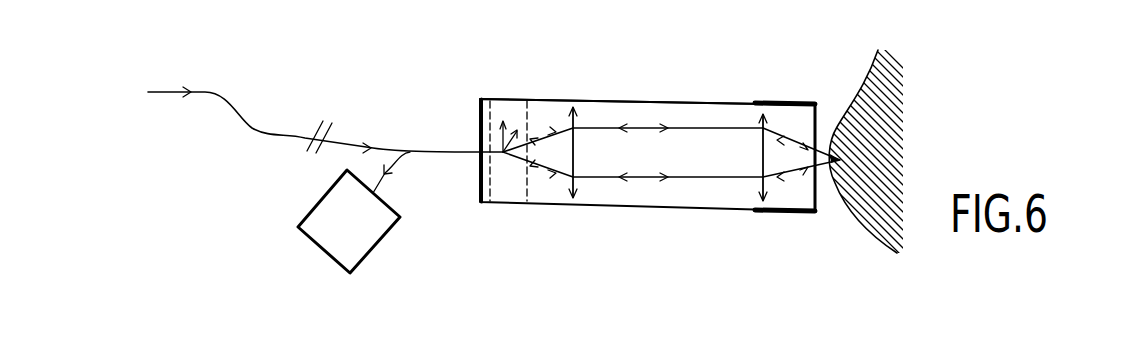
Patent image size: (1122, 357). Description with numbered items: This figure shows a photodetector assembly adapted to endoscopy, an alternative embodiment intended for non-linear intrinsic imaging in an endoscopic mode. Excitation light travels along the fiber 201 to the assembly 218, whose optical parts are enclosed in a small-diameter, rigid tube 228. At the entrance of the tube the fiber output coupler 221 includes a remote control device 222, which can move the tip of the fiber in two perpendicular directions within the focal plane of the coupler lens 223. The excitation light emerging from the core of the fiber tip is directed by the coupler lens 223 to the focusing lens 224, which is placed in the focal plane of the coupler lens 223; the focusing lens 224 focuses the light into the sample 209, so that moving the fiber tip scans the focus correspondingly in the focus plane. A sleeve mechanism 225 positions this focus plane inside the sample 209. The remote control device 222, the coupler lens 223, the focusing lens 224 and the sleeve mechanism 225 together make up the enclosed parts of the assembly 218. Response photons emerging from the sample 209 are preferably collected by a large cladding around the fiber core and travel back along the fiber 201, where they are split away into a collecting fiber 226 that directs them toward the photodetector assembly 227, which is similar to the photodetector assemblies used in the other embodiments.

The fiber 201 is at (243, 117).
The assembly 218 is at (458, 84).
The rigid tube 228 is at (633, 98).
The fiber output coupler 221 is at (493, 203).
The remote control device 222 is at (511, 191).
The coupler lens 223 is at (577, 184).
The focusing lens 224 is at (760, 187).
The sleeve mechanism 225 is at (785, 215).
The collecting fiber 226 is at (407, 154).
The photodetector assembly 227 is at (313, 205).
The sample 209 is at (873, 83).